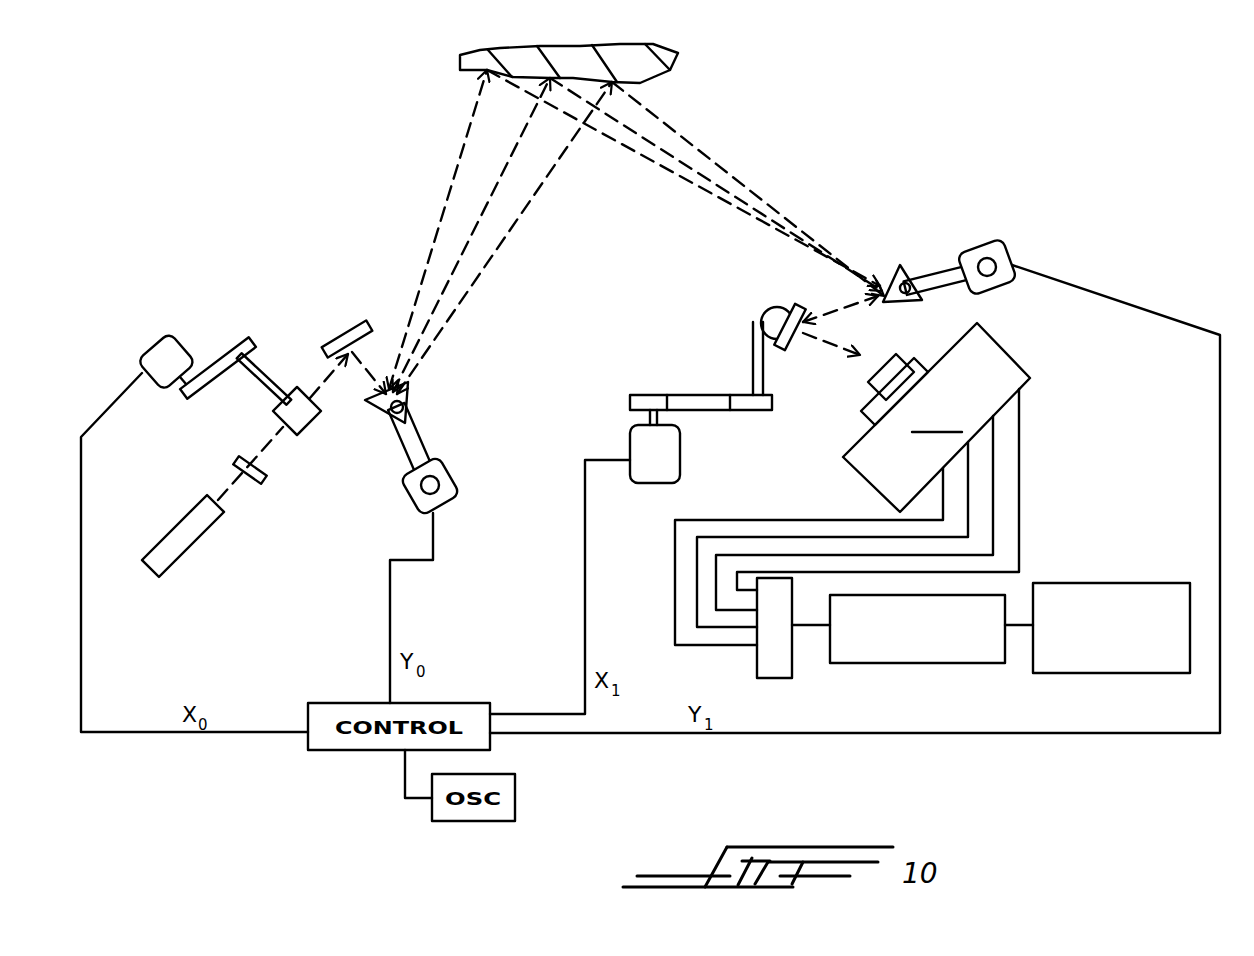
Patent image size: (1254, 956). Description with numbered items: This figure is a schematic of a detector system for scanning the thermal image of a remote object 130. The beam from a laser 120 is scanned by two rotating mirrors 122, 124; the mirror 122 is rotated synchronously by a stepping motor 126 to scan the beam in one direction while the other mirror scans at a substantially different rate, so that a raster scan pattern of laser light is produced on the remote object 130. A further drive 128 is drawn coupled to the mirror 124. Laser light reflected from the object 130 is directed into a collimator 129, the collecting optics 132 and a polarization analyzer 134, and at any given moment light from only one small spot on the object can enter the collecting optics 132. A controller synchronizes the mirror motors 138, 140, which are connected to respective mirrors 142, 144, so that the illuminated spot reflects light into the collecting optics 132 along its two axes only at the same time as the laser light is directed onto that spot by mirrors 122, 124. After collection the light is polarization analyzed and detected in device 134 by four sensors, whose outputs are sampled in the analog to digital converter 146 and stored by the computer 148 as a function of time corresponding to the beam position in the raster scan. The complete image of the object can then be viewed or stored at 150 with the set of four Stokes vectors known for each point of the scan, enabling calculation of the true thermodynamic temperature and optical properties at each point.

The laser 120 is at (212, 528).
The rotating mirror 122 is at (298, 395).
The rotating mirror 124 is at (406, 392).
The stepping motor 126 is at (162, 345).
The galvanometer scanner 128 is at (456, 480).
The collimator 129 is at (868, 392).
The remote object 130 is at (680, 62).
The collecting optics 132 is at (941, 405).
The polarization analyzer 134 is at (937, 419).
The mirror motor 138 is at (990, 246).
The mirror motor 140 is at (630, 438).
The mirror 142 is at (906, 272).
The mirror 144 is at (800, 305).
The analog to digital converter 146 is at (786, 680).
The computer 148 is at (952, 665).
The image or storage 150 is at (1150, 676).